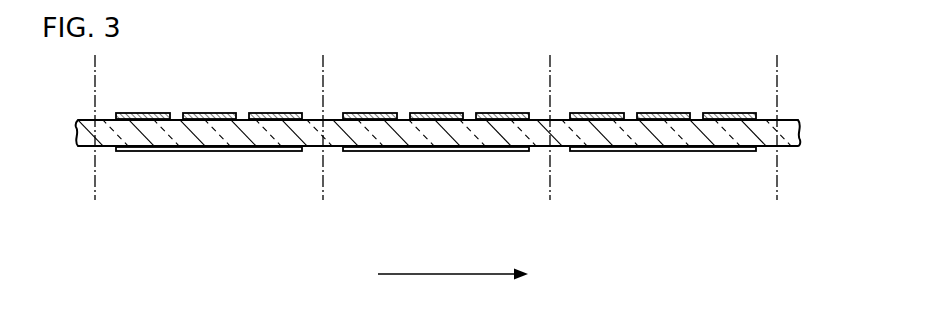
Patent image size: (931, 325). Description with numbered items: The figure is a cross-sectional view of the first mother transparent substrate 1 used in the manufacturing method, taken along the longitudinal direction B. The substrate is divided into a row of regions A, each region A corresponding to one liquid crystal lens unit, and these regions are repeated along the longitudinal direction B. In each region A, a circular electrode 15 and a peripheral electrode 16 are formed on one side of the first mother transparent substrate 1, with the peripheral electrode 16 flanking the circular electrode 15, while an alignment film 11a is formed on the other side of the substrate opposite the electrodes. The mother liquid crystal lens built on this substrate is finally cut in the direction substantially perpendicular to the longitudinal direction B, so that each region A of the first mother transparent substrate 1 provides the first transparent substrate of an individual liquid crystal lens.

The first mother transparent substrate 1 is at (787, 128).
The circular electrode 15 is at (208, 121).
The peripheral electrode 16 is at (140, 121).
The alignment film 11a is at (242, 152).
The region A is at (322, 71).
The longitudinal direction B is at (450, 276).